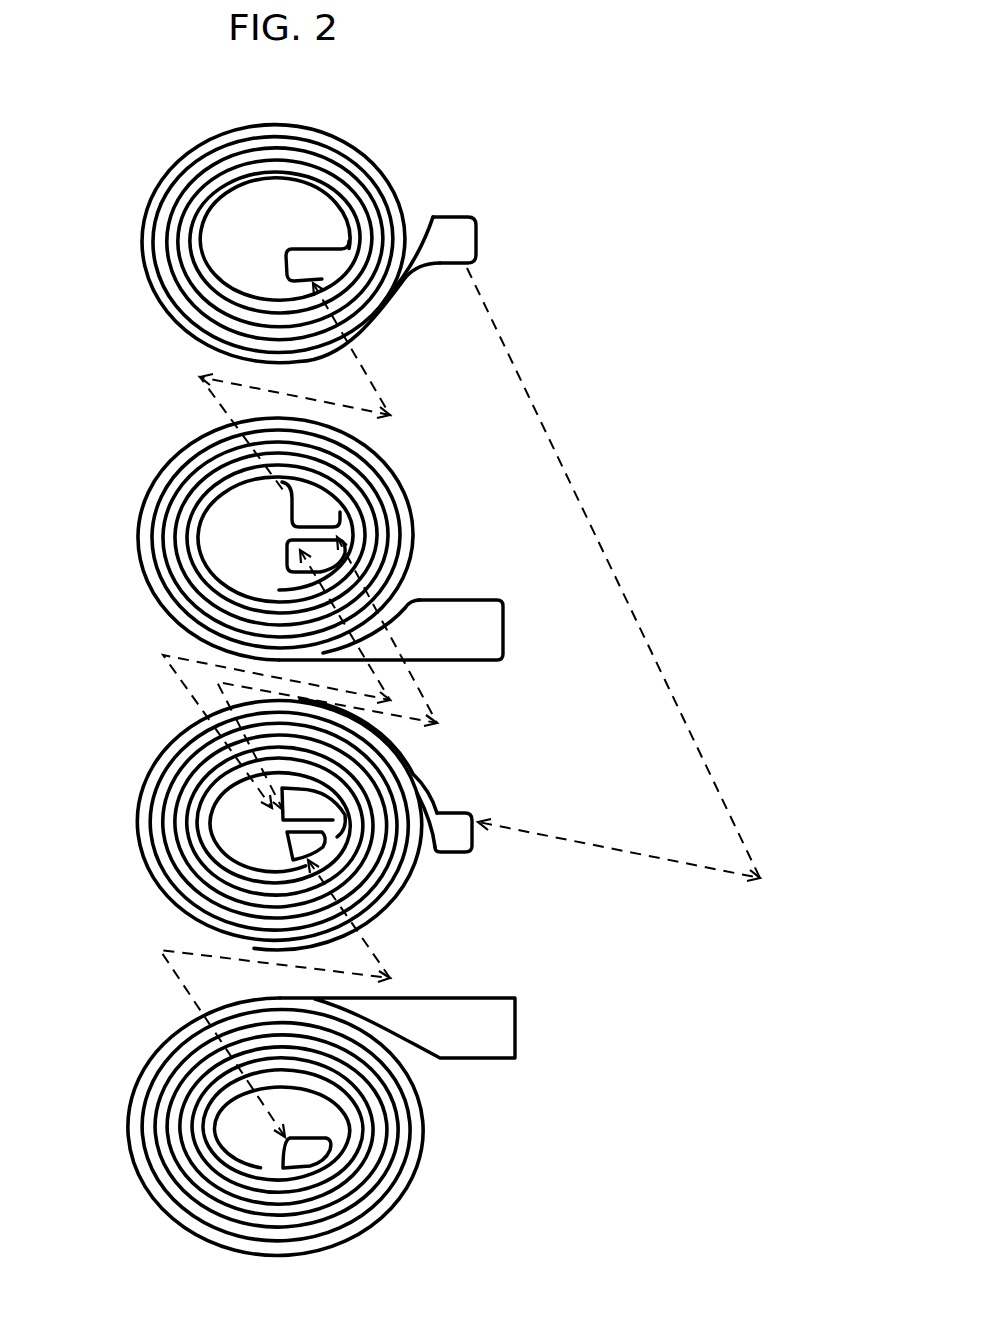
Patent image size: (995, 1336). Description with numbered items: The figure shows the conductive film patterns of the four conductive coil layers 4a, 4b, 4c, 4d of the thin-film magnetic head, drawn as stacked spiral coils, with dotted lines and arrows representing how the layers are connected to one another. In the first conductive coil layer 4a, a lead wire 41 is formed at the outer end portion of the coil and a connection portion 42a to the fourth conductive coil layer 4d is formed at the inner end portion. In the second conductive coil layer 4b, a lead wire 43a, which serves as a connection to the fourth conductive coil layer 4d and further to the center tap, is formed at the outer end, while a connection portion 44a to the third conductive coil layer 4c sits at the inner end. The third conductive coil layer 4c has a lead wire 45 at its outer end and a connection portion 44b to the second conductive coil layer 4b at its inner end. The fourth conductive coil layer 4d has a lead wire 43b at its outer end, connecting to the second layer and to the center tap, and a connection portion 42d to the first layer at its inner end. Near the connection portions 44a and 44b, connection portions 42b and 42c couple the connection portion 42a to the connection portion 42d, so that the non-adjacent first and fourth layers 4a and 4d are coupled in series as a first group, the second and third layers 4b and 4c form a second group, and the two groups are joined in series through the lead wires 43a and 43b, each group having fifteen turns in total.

The first conductive coil layer 4a is at (140, 1188).
The second conductive coil layer 4b is at (162, 312).
The third conductive coil layer 4c is at (158, 598).
The fourth conductive coil layer 4d is at (162, 884).
The lead wire 41 is at (490, 1059).
The connection portion 42a is at (290, 1138).
The connection portion 42b is at (286, 266).
The connection portion 42c is at (287, 557).
The connection portion 42d is at (285, 838).
The lead wire 43a is at (469, 845).
The lead wire 43b is at (478, 243).
The connection portion 44a is at (282, 792).
The connection portion 44b is at (283, 492).
The lead wire 45 is at (503, 657).